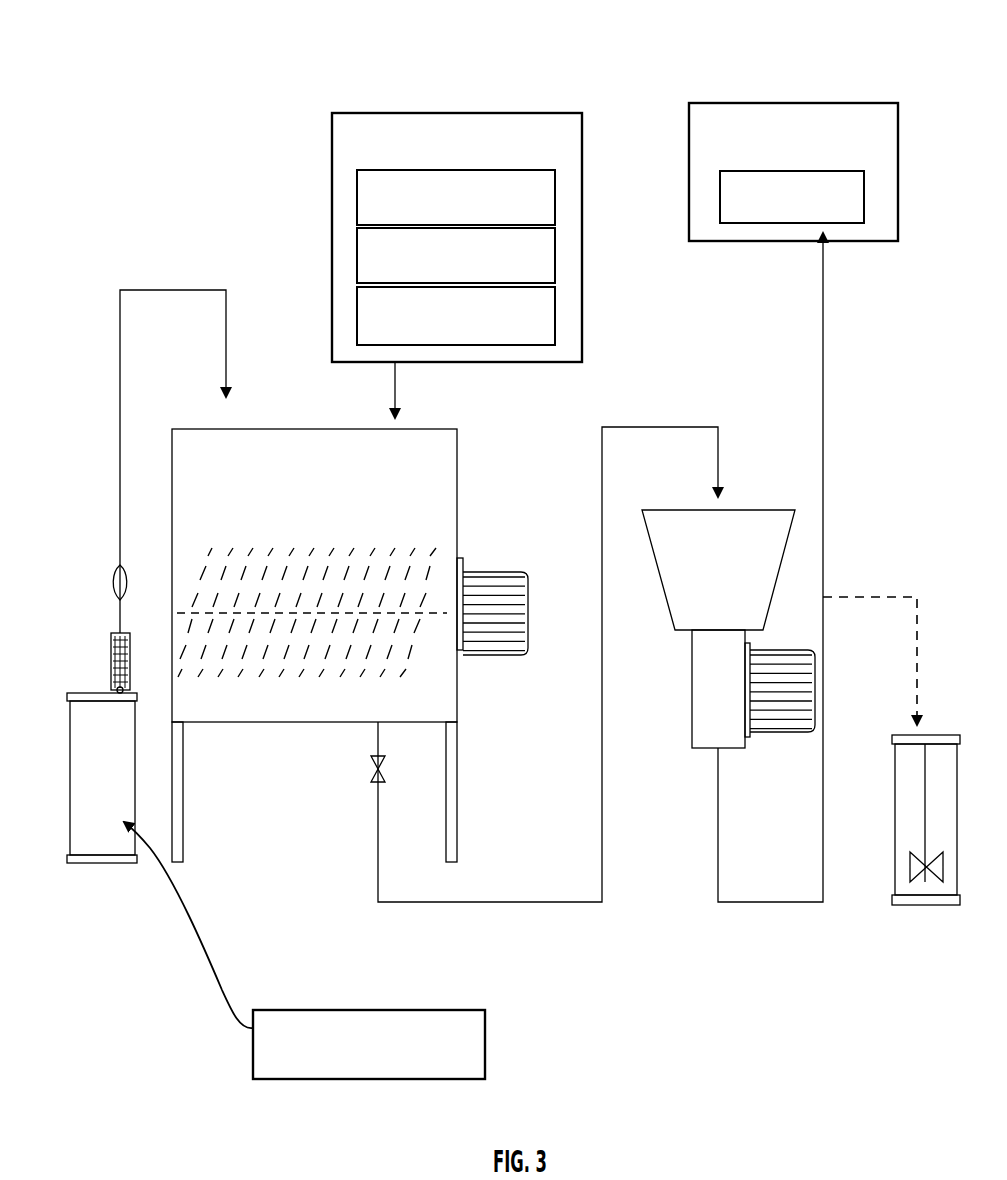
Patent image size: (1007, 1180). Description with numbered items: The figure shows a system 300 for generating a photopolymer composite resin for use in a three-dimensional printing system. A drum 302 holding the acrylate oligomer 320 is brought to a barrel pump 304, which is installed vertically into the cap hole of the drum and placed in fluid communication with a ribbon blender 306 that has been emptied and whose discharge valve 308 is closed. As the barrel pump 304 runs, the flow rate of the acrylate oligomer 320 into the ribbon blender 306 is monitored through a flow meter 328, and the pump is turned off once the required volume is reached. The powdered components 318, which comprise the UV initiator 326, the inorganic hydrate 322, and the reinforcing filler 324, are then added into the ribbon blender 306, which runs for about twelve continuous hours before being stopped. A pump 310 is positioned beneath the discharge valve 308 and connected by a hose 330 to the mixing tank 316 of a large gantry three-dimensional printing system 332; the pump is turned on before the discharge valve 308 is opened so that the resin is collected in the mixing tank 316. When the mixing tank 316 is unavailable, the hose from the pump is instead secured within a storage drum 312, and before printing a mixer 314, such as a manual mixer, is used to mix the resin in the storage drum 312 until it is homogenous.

The system 300 is at (887, 82).
The drum 302 is at (135, 906).
The barrel pump 304 is at (111, 663).
The ribbon blender 306 is at (317, 807).
The discharge valve 308 is at (372, 777).
The pump 310 is at (755, 579).
The storage drum 312 is at (962, 949).
The mixer 314 is at (908, 866).
The mixing tank 316 is at (847, 217).
The powdered components 318 is at (555, 159).
The acrylate oligomer 320 is at (450, 1062).
The inorganic hydrate 322 is at (535, 271).
The reinforcing filler 324 is at (535, 334).
The UV initiator 326 is at (510, 214).
The flow meter 328 is at (121, 566).
The hose 330 is at (718, 857).
The 3D printing system 332 is at (875, 147).